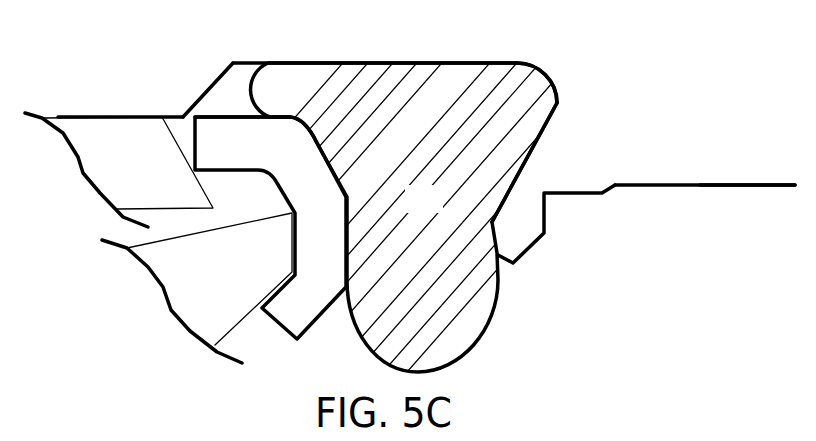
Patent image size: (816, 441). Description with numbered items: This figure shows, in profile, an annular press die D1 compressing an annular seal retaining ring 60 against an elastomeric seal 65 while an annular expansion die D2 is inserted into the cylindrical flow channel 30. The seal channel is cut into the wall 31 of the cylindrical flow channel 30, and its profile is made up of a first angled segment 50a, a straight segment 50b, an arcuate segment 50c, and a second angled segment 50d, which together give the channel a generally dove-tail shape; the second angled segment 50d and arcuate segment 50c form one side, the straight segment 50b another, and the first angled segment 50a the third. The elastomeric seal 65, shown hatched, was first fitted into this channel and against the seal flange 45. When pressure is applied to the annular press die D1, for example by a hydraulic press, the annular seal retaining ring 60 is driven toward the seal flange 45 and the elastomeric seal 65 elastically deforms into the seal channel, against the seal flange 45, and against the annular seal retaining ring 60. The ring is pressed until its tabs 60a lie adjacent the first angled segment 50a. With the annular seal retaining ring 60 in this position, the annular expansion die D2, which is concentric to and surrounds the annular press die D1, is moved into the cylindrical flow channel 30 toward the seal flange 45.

The cylindrical flow channel 30 is at (720, 258).
The wall 31 is at (90, 115).
The seal flange 45 is at (547, 228).
The first angled segment 50a is at (215, 83).
The straight segment 50b is at (398, 62).
The arcuate segment 50c is at (553, 90).
The second angled segment 50d is at (545, 140).
The annular seal retaining ring 60 is at (308, 328).
The tabs 60a is at (228, 117).
The elastomeric seal 65 is at (438, 211).
The annular press die D1 is at (225, 288).
The annular expansion die D2 is at (137, 173).